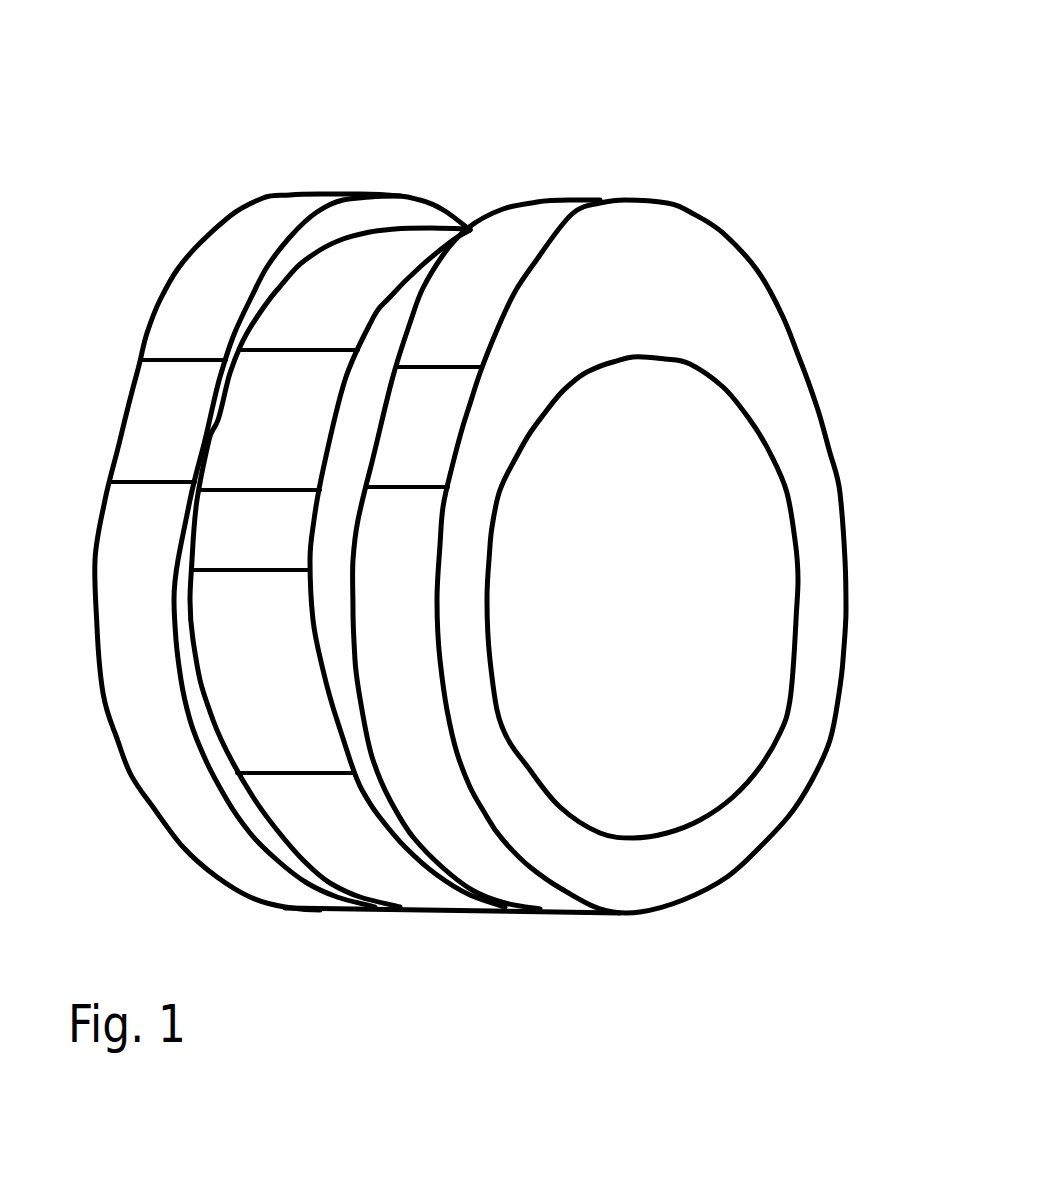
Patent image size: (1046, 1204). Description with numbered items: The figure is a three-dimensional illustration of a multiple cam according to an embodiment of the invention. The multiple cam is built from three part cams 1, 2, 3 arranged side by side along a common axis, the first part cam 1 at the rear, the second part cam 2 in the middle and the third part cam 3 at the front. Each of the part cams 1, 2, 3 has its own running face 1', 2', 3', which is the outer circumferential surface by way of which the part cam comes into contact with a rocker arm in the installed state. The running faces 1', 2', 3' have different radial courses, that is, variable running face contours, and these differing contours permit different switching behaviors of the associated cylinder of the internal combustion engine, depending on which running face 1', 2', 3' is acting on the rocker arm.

The part cam 1 is at (282, 460).
The part cam 2 is at (373, 459).
The part cam 3 is at (641, 462).
The running face 1' is at (255, 612).
The running face 2' is at (357, 629).
The running face 3' is at (459, 614).